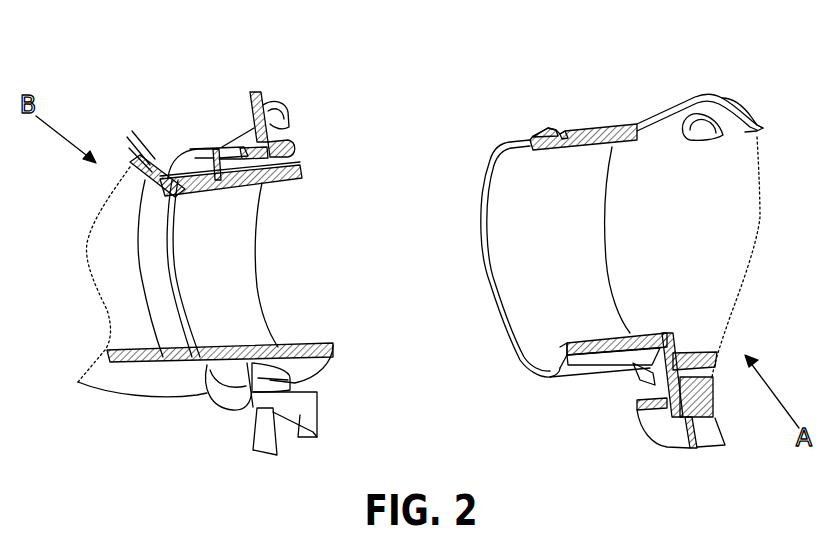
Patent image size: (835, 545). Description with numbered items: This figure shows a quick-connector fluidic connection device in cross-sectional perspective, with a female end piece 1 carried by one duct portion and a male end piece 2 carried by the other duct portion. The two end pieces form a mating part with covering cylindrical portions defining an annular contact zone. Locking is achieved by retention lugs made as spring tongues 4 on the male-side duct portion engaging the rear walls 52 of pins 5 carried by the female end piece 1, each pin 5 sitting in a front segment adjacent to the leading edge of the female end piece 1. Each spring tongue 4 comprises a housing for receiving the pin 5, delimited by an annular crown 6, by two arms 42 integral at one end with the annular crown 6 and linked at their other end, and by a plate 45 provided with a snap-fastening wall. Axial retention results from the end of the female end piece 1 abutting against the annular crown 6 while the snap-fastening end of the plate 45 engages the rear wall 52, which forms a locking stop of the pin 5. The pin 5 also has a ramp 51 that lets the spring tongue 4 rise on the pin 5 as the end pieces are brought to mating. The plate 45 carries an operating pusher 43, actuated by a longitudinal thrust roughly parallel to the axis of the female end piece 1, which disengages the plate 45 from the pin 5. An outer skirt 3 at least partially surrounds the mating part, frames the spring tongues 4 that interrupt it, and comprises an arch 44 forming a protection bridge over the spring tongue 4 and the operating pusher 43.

The female end piece 1 is at (519, 192).
The male end piece 2 is at (315, 365).
The outer skirt 3 is at (257, 395).
The spring tongue 4 is at (310, 139).
The arm 42 is at (222, 145).
The operating pusher 43 is at (263, 98).
The arch 44 is at (289, 120).
The plate 45 is at (277, 181).
The pin 5 is at (555, 128).
The ramp 51 is at (537, 133).
The rear wall 52 is at (567, 133).
The annular crown 6 is at (191, 162).